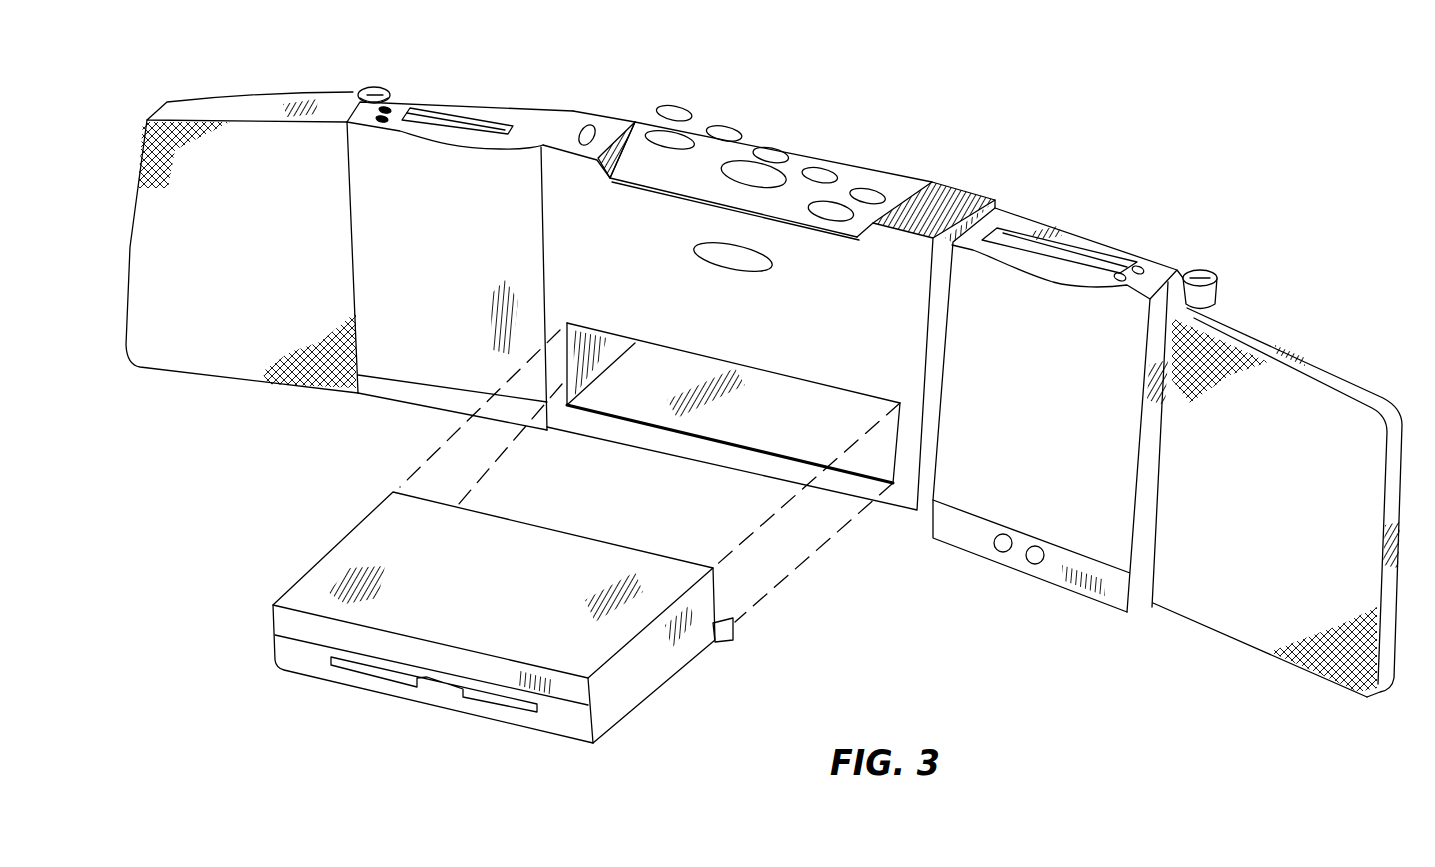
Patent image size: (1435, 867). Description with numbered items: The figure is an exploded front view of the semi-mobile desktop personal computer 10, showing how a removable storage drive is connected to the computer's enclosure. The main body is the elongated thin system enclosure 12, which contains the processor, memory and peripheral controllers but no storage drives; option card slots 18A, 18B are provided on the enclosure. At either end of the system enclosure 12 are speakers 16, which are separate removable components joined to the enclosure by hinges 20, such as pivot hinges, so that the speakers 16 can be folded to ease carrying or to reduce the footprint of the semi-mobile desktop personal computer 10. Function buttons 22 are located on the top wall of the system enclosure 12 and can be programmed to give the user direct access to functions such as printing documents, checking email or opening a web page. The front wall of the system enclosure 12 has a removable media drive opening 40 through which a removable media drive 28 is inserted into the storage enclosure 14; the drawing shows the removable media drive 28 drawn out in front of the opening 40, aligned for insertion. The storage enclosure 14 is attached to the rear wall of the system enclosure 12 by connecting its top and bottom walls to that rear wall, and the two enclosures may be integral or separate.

The semi-mobile desktop personal computer 10 is at (1103, 100).
The system enclosure 12 is at (960, 549).
The storage enclosure 14 is at (595, 394).
The speakers 16 is at (274, 384).
The first display 18A is at (460, 110).
The second display 18B is at (1077, 250).
The hinges 20 is at (377, 88).
The function buttons 22 is at (668, 126).
The removable media drive 28 is at (273, 652).
The removable media drive opening 40 is at (762, 370).